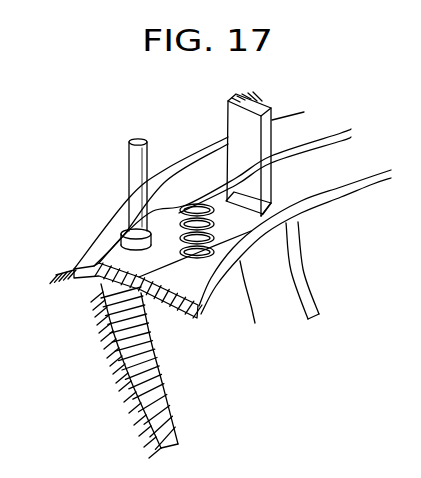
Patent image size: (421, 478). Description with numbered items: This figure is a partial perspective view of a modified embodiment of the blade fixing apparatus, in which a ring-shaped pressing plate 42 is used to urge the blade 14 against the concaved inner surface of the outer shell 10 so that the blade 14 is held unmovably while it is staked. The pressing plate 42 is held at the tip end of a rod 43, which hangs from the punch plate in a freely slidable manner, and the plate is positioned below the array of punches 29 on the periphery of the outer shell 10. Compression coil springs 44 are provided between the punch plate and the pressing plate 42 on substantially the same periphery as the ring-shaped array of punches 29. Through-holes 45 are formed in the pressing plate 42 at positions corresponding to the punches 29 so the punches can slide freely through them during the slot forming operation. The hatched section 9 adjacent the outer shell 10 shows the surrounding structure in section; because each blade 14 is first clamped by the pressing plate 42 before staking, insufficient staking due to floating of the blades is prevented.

The casing wall 9 is at (93, 285).
The outer shell 10 is at (83, 245).
The blade 14 is at (287, 259).
The punch 29 is at (256, 114).
The pressing plate 42 is at (187, 165).
The rod 43 is at (121, 164).
The compression coil spring 44 is at (211, 273).
The through-hole 45 is at (258, 190).